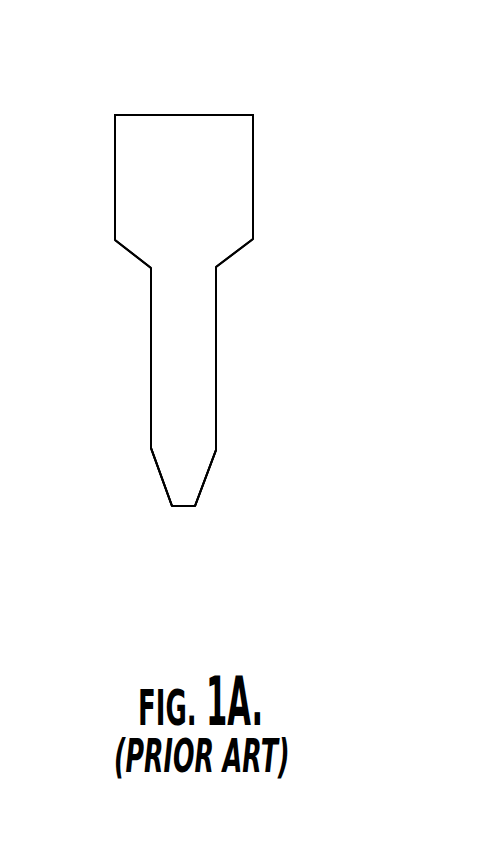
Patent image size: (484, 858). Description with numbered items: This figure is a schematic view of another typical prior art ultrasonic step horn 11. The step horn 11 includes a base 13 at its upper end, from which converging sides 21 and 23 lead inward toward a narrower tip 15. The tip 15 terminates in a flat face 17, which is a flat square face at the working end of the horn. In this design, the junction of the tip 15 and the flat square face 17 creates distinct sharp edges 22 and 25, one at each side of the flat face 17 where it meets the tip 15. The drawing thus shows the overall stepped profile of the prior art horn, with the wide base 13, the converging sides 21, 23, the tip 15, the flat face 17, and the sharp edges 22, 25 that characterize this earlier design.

The step horn 11 is at (368, 34).
The base 13 is at (253, 175).
The tip 15 is at (235, 424).
The flat face 17 is at (178, 507).
The converging side 21 is at (226, 260).
The sharp edge 22 is at (195, 506).
The converging side 23 is at (138, 258).
The sharp edge 25 is at (172, 506).